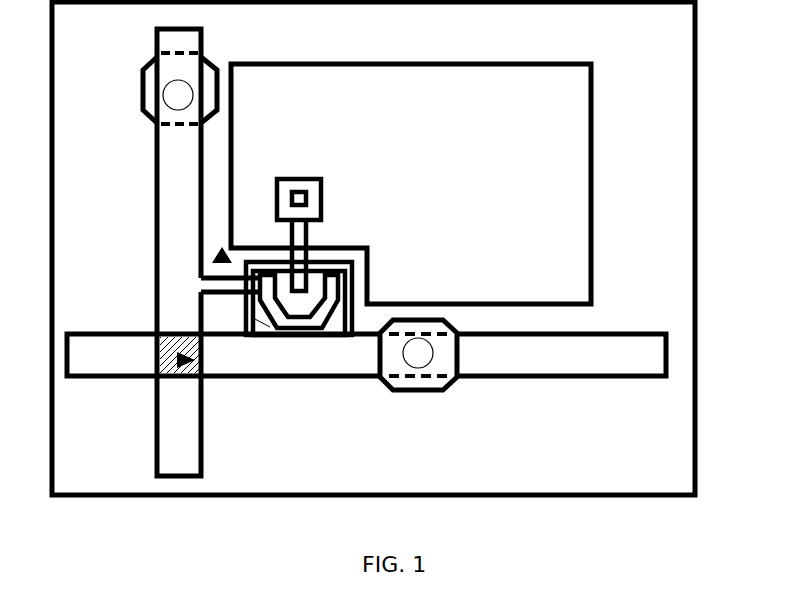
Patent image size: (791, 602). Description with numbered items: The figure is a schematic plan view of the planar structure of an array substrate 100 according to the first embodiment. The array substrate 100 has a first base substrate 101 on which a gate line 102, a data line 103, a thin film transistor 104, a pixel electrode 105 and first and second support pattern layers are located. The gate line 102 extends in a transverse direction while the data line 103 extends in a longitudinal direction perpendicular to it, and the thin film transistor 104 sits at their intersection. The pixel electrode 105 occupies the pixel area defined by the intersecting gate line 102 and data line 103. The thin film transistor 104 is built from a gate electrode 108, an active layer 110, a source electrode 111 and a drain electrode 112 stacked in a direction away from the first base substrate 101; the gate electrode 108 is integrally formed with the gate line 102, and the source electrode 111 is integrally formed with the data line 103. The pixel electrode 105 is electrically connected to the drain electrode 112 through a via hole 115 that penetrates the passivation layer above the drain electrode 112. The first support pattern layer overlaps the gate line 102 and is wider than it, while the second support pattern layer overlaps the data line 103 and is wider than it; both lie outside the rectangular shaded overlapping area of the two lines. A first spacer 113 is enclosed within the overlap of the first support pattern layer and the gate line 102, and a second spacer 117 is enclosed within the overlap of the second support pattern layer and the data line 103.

The array substrate 100 is at (358, 536).
The first base substrate 101 is at (697, 118).
The gate line 102 is at (650, 360).
The data line 103 is at (155, 43).
The thin film transistor 104 is at (203, 251).
The pixel electrode 105 is at (387, 63).
The gate electrode 108 is at (268, 326).
The active layer 110 is at (273, 343).
The source electrode 111 is at (245, 313).
The drain electrode 112 is at (288, 243).
The first spacer 113 is at (430, 365).
The via hole 115 is at (289, 195).
The second spacer 117 is at (143, 80).